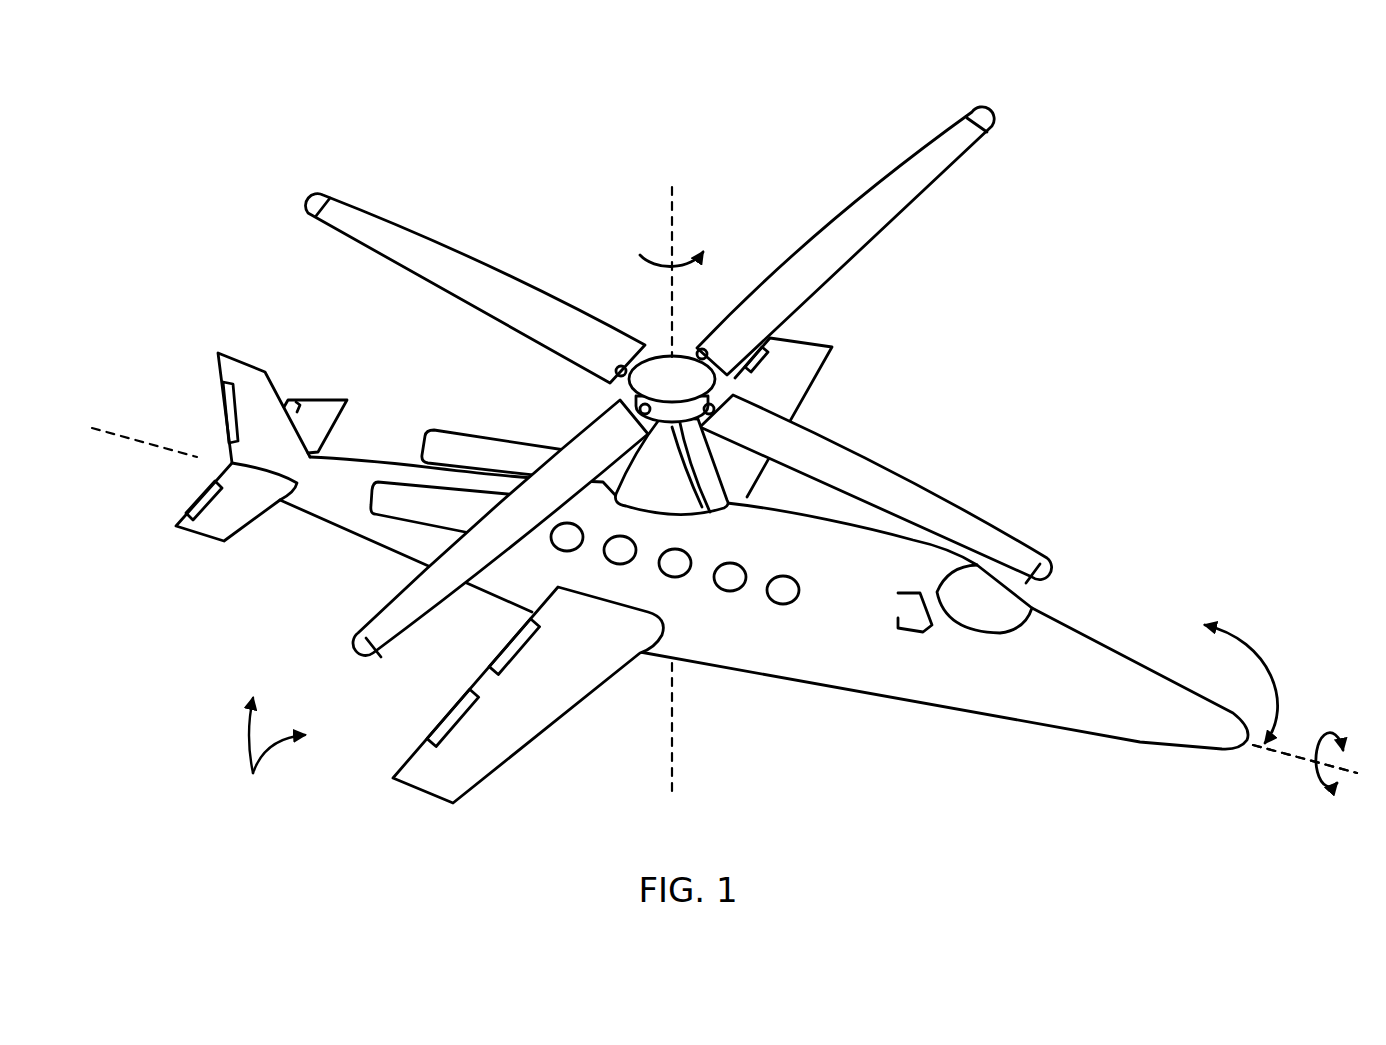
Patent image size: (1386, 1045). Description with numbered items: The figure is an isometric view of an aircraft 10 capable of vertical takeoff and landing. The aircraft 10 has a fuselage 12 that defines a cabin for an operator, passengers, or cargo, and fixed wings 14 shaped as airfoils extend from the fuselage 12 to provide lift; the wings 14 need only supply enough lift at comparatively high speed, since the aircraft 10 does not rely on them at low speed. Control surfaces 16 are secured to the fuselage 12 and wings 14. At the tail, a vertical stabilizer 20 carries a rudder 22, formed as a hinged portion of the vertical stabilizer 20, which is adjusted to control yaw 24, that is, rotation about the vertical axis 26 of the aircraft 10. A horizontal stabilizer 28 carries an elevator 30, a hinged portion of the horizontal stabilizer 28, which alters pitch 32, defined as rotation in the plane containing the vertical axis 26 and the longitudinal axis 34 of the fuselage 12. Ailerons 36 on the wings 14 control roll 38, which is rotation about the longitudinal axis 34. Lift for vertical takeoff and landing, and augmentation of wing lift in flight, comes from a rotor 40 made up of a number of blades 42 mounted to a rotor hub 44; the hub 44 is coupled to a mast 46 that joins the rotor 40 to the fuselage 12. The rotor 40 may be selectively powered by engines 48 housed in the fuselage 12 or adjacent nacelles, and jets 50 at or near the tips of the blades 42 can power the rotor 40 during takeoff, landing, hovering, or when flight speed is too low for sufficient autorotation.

The aircraft 10 is at (724, 455).
The fuselage 12 is at (836, 684).
The fixed wings 14 is at (796, 392).
The control surfaces 16 is at (271, 750).
The vertical stabilizer 20 is at (232, 390).
The rudder 22 is at (226, 411).
The yaw 24 is at (640, 256).
The vertical axis 26 is at (676, 205).
The horizontal stabilizer 28 is at (215, 510).
The elevator 30 is at (206, 496).
The pitch 32 is at (1258, 663).
The longitudinal axis 34 is at (1287, 753).
The ailerons 36 is at (758, 358).
The roll 38 is at (1320, 795).
The rotor 40 is at (697, 382).
The blades 42 is at (447, 252).
The rotor hub 44 is at (677, 481).
The mast 46 is at (667, 478).
The engines 48 is at (473, 440).
The jets 50 is at (311, 197).